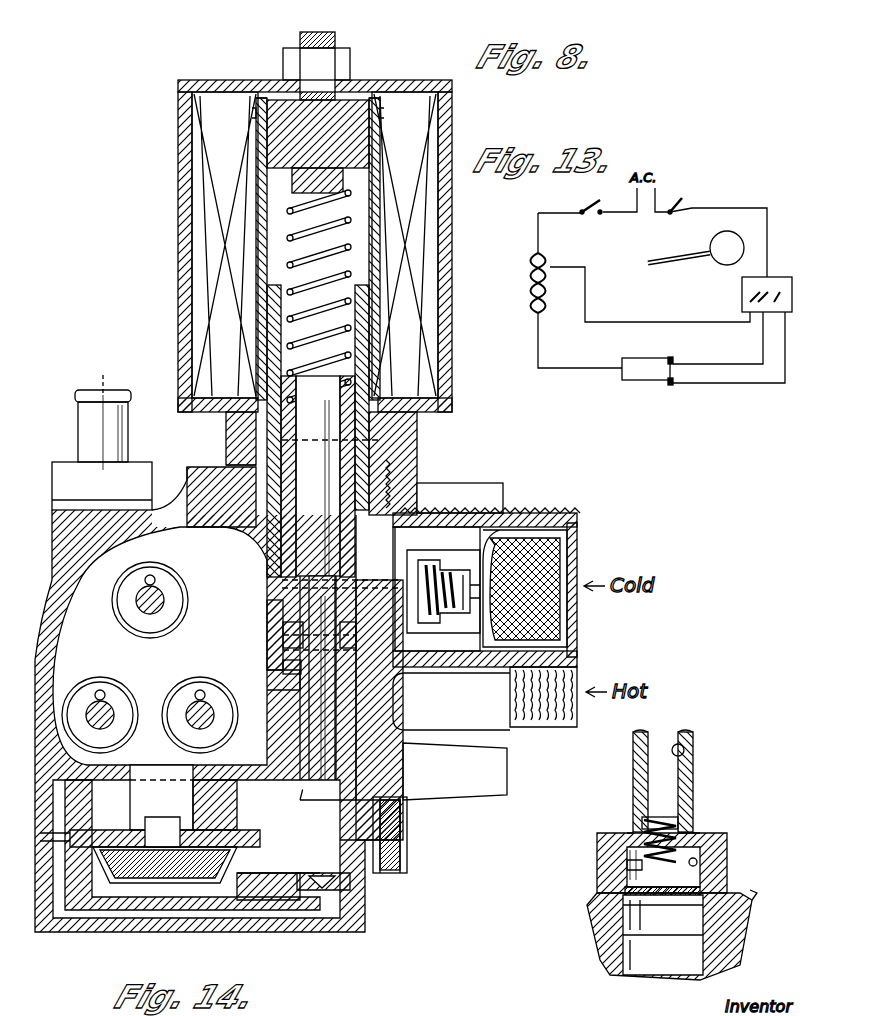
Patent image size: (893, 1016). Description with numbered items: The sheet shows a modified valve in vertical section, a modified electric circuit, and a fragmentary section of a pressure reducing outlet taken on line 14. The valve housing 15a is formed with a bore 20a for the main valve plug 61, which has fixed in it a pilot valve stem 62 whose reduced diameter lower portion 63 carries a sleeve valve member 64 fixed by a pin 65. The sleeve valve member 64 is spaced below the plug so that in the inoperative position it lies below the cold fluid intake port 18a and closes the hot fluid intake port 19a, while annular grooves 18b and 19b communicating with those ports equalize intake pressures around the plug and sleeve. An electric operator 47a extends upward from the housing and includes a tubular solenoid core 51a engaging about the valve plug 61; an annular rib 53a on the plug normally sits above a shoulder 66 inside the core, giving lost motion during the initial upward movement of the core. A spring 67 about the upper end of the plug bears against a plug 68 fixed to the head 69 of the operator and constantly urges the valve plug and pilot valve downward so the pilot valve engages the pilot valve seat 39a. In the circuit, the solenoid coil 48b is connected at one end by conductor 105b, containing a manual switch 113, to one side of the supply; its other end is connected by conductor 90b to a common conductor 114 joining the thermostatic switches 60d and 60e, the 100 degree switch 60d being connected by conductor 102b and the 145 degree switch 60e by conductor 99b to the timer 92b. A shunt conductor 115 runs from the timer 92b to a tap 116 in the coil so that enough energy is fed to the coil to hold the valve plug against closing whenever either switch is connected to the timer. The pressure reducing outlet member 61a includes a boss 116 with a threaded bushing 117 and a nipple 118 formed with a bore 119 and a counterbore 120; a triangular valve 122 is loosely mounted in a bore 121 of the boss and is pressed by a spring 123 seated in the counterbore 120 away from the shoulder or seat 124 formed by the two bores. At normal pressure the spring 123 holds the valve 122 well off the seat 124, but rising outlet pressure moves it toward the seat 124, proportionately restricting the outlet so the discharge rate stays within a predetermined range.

In FIG. 8, the head 69 is at (228, 80).
In FIG. 8, the plug 68 is at (352, 92).
In FIG. 8, the spring 67 is at (319, 296).
In FIG. 8, the electric operator 47a is at (176, 266).
In FIG. 8, the tubular solenoid core 51a is at (264, 354).
In FIG. 8, the annular rib 53a is at (352, 396).
In FIG. 8, the main valve plug 61 is at (310, 478).
In FIG. 8, the pilot valve stem 62 is at (345, 470).
In FIG. 8, the shoulder 66 is at (290, 440).
In FIG. 8, the valve housing 15a is at (420, 472).
In FIG. 8, the outlet member 61a is at (84, 441).
In FIG. 14, the outlet member 61a is at (690, 790).
In FIG. 8, the section line 14 is at (103, 388).
In FIG. 8, the pin 65 is at (337, 678).
In FIG. 8, the bore 20a is at (266, 558).
In FIG. 8, the annular groove 18b is at (283, 607).
In FIG. 8, the annular groove 19b is at (297, 642).
In FIG. 8, the sleeve valve member 64 is at (293, 633).
In FIG. 8, the reduced diameter lower portion 63 is at (313, 695).
In FIG. 8, the pilot valve seat 39a is at (315, 896).
In FIG. 8, the cold fluid intake port 18a is at (407, 577).
In FIG. 8, the hot fluid intake port 19a is at (400, 690).
In FIG. 13, the manual switch 113 is at (592, 202).
In FIG. 13, the conductor 105b is at (538, 232).
In FIG. 13, the tap / boss 116 is at (555, 266).
In FIG. 14, the tap / boss 116 is at (595, 848).
In FIG. 13, the solenoid coil 48b is at (530, 302).
In FIG. 13, the shunt conductor 115 is at (614, 322).
In FIG. 13, the timer 92b is at (742, 290).
In FIG. 13, the conductor 90b is at (535, 355).
In FIG. 13, the common conductor 114 is at (620, 385).
In FIG. 13, the 100° switch rating 100 is at (668, 357).
In FIG. 13, the thermostatic switch 60d is at (718, 338).
In FIG. 13, the conductor 102b is at (685, 365).
In FIG. 13, the 145° switch rating 145 is at (665, 384).
In FIG. 13, the thermostatic switch 60e is at (656, 388).
In FIG. 13, the conductor 99b is at (752, 385).
In FIG. 14, the nipple 118 is at (632, 775).
In FIG. 14, the bore 119 is at (688, 758).
In FIG. 14, the spring 123 is at (640, 818).
In FIG. 14, the counterbore 120 is at (690, 826).
In FIG. 14, the shoulder or seat 124 is at (700, 840).
In FIG. 14, the bore 121 is at (705, 866).
In FIG. 14, the triangular valve 122 is at (600, 883).
In FIG. 14, the threaded bushing 117 is at (612, 920).